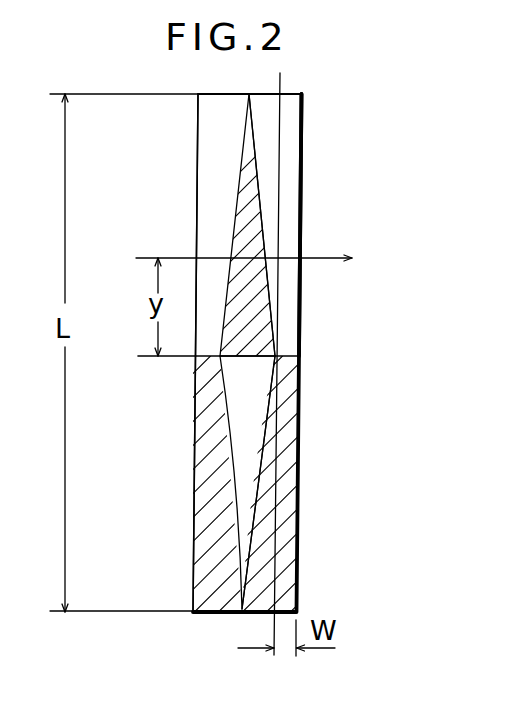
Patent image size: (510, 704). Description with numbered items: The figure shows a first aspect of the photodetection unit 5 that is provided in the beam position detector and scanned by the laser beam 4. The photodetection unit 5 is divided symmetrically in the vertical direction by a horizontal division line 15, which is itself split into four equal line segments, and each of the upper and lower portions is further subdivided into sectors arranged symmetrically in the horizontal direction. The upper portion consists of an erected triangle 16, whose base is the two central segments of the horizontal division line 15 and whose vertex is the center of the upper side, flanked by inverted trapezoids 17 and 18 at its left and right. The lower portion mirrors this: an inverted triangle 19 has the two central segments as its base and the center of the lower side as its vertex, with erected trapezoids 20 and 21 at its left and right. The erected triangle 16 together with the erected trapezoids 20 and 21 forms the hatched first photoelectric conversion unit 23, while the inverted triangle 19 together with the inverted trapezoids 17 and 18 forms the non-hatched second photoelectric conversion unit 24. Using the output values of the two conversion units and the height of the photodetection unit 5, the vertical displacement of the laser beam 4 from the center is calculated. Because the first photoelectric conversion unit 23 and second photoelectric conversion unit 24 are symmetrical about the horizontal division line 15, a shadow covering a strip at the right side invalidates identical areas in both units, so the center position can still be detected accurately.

The laser beam 4 is at (312, 258).
The photodetection unit 5 is at (313, 312).
The horizontal division line 15 is at (207, 356).
The erected triangle 16 is at (243, 220).
The inverted trapezoid 17 is at (218, 173).
The inverted trapezoid 18 is at (292, 172).
The inverted triangle 19 is at (245, 443).
The erected trapezoid 20 is at (207, 538).
The erected trapezoid 21 is at (287, 547).
The first photoelectric conversion unit 23 is at (258, 146).
The second photoelectric conversion unit 24 is at (258, 490).